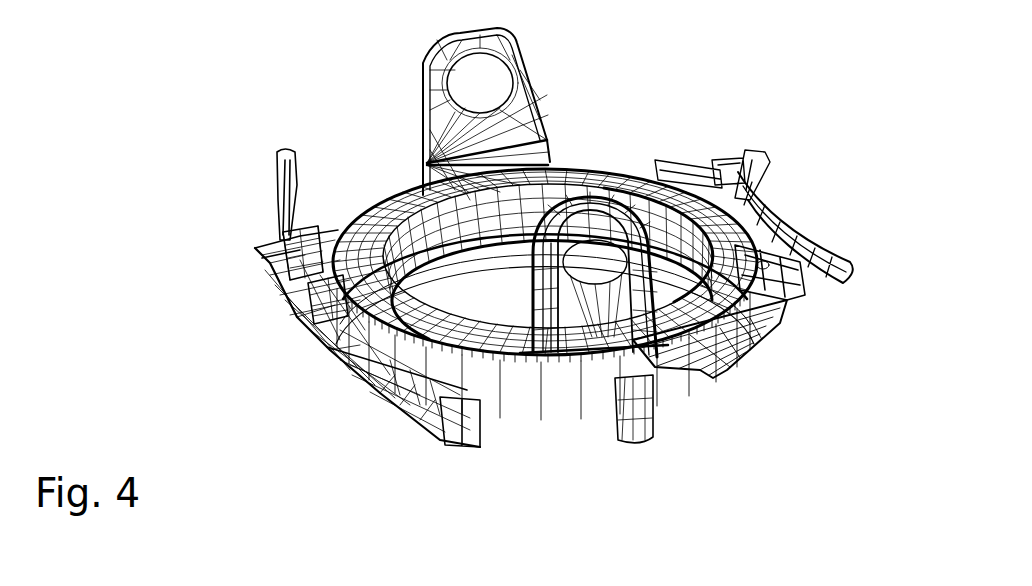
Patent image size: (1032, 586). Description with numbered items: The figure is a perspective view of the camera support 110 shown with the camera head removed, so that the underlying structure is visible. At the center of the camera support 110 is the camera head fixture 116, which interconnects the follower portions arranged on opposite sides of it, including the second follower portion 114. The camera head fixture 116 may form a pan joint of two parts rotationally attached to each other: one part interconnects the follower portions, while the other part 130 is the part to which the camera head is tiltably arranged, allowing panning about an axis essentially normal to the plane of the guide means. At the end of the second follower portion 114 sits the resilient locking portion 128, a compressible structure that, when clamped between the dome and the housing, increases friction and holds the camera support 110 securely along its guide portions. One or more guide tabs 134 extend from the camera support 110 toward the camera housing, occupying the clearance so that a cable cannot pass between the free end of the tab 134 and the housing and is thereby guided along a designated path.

The camera support 110 is at (217, 142).
The second follower portion 114 is at (297, 305).
The camera head fixture 116 is at (563, 380).
The resilient locking portion 128 is at (260, 250).
The other part of the pan joint 130 is at (522, 52).
The guide tab 134 is at (637, 440).